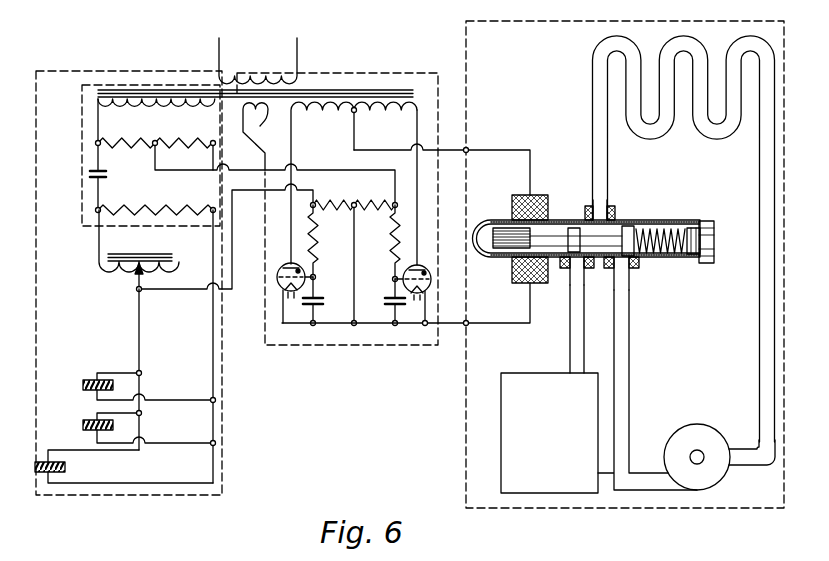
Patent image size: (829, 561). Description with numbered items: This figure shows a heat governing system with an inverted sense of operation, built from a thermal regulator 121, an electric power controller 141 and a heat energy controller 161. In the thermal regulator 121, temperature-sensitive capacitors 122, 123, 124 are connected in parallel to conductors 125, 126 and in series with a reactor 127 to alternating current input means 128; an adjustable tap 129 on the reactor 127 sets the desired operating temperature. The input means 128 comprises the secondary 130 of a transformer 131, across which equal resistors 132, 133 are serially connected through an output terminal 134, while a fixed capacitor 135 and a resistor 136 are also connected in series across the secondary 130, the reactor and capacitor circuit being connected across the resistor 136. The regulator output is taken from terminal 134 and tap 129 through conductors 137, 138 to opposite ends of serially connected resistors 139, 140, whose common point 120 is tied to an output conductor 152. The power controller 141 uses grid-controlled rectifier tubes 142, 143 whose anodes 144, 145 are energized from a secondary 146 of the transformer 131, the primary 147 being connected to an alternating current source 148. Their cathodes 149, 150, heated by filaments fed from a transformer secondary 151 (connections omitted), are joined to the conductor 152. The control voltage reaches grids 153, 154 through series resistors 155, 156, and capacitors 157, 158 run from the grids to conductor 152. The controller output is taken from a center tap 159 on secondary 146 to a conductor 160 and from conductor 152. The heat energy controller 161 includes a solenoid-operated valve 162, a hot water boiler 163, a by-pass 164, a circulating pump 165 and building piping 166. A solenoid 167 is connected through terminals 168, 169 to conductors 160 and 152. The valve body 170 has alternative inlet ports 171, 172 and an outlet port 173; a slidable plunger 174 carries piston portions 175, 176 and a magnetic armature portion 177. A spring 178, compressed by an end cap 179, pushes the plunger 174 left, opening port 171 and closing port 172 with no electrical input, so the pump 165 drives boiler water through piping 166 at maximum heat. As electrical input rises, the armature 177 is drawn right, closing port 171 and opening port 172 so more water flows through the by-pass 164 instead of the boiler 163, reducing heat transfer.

The common point 120 is at (353, 207).
The thermal regulator 121 is at (105, 71).
The temperature-sensitive capacitor 122 is at (94, 378).
The temperature-sensitive capacitor 123 is at (92, 420).
The temperature-sensitive capacitor 124 is at (48, 462).
The conductor 125 is at (138, 332).
The conductor 126 is at (212, 337).
The reactor 127 is at (128, 262).
The alternating current input means 128 is at (82, 138).
The adjustable tap 129 is at (136, 290).
The secondary 130 is at (192, 106).
The transformer 131 is at (170, 88).
The resistor 132 is at (126, 154).
The resistor 133 is at (186, 150).
The output terminal 134 is at (155, 141).
The fixed capacitor 135 is at (90, 176).
The resistor 136 is at (170, 210).
The conductor 137 is at (253, 170).
The conductor 138 is at (252, 192).
The resistor 139 is at (334, 202).
The resistor 140 is at (374, 202).
The electric power controller 141 is at (372, 73).
The grid-controlled rectifier tube 142 is at (277, 270).
The grid-controlled rectifier tube 143 is at (430, 272).
The anode 144 is at (286, 263).
The anode 145 is at (424, 268).
The secondary 146 is at (388, 110).
The primary 147 is at (255, 74).
The alternating current source 148 is at (294, 36).
The cathode 149 is at (281, 297).
The cathode 150 is at (432, 288).
The transformer secondary 151 is at (259, 124).
The output conductor 152 is at (452, 330).
The grid 153 is at (277, 277).
The grid 154 is at (430, 280).
The series resistor 155 is at (318, 250).
The series resistor 156 is at (390, 250).
The capacitor 157 is at (345, 294).
The capacitor 158 is at (384, 305).
The center tap 159 is at (352, 112).
The conductor 160 is at (462, 148).
The heat energy controller 161 is at (467, 79).
The solenoid-operated valve 162 is at (548, 222).
The hot water boiler 163 is at (502, 450).
The by-pass 164 is at (630, 370).
The circulating pump 165 is at (693, 424).
The piping 166 is at (665, 136).
The solenoid 167 is at (540, 286).
The terminal 168 is at (532, 200).
The terminal 169 is at (528, 282).
The body 170 is at (655, 228).
The inlet port 171 is at (574, 283).
The inlet port 172 is at (630, 275).
The outlet port 173 is at (606, 202).
The slidable plunger 174 is at (590, 290).
The piston portion 175 is at (573, 228).
The piston portion 176 is at (627, 226).
The armature portion 177 is at (498, 248).
The spring 178 is at (690, 228).
The end cap 179 is at (715, 240).